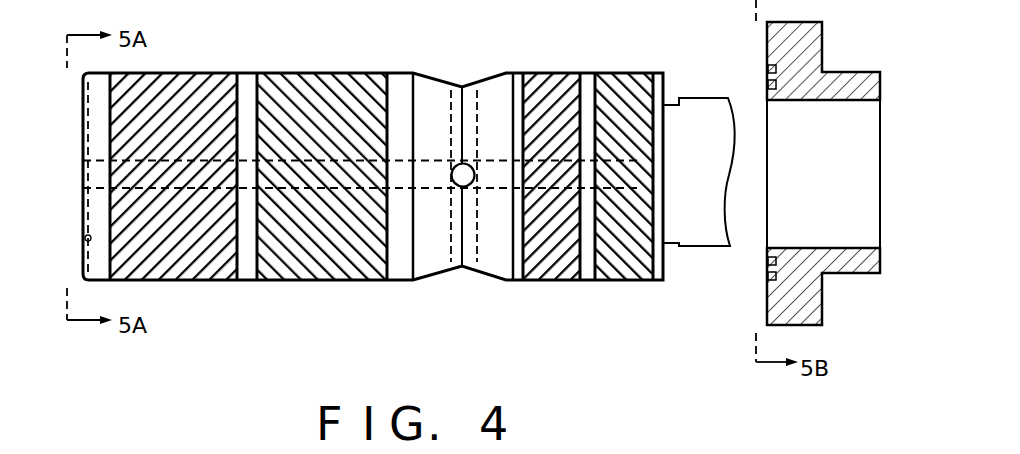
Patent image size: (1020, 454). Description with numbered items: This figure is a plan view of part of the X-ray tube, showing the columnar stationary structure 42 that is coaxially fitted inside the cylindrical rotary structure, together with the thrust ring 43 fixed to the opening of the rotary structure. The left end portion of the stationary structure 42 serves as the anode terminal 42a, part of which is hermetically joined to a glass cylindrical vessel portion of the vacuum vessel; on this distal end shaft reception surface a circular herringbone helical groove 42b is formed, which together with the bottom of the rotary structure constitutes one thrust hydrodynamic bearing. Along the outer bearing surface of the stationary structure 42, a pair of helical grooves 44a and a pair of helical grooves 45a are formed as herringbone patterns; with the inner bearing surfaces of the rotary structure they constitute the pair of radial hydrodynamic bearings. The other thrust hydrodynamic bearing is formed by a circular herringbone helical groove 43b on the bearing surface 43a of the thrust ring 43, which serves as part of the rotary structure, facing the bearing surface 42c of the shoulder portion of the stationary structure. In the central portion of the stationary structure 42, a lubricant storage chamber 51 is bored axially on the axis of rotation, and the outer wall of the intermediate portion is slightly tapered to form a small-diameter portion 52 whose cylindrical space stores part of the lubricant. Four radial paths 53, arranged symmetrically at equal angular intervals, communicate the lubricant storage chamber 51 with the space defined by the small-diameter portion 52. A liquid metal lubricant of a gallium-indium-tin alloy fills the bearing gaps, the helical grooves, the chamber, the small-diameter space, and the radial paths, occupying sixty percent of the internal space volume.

The stationary structure 42 is at (390, 64).
The anode terminal 42a is at (83, 137).
The helical groove 42b is at (86, 238).
The bearing surface 42c is at (667, 88).
The thrust ring 43 is at (830, 55).
The bearing surface 43a is at (767, 270).
The helical groove 43b is at (767, 84).
The helical grooves 44a is at (203, 218).
The helical grooves 45a is at (555, 232).
The lubricant storage chamber 51 is at (444, 192).
The small-diameter portion 52 is at (503, 278).
The radial paths 53 is at (478, 143).